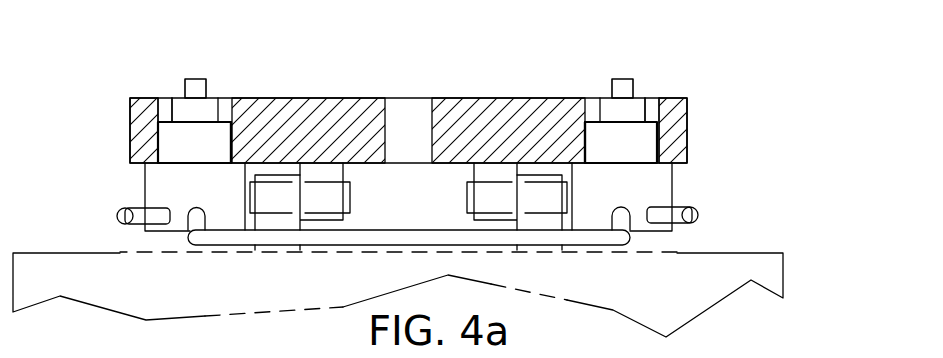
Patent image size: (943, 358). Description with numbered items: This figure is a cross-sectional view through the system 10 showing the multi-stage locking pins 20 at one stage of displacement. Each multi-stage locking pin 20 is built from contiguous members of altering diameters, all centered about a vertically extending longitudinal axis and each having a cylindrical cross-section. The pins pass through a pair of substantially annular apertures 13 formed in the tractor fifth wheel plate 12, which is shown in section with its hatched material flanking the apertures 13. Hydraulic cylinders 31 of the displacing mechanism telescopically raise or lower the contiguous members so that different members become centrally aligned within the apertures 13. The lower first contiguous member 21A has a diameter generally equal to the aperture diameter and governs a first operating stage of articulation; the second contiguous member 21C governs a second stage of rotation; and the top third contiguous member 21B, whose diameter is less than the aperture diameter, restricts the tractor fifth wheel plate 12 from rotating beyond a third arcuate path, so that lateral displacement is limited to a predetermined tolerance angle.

The system 10 is at (704, 64).
The tractor fifth wheel plate 12 is at (452, 117).
The apertures 13 is at (168, 98).
The multi-stage locking pin 20 is at (180, 145).
The first contiguous member 21A is at (236, 140).
The third contiguous member 21B is at (202, 80).
The second contiguous member 21C is at (182, 105).
The hydraulic cylinders 31 is at (145, 180).